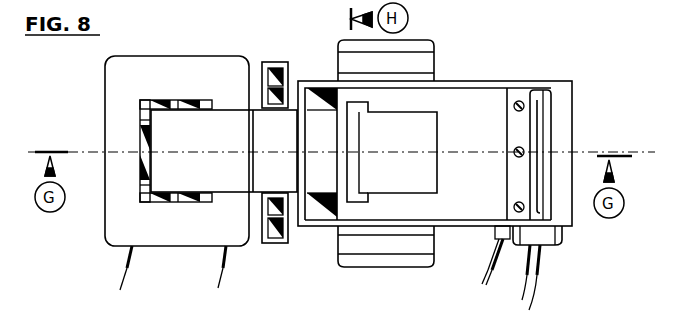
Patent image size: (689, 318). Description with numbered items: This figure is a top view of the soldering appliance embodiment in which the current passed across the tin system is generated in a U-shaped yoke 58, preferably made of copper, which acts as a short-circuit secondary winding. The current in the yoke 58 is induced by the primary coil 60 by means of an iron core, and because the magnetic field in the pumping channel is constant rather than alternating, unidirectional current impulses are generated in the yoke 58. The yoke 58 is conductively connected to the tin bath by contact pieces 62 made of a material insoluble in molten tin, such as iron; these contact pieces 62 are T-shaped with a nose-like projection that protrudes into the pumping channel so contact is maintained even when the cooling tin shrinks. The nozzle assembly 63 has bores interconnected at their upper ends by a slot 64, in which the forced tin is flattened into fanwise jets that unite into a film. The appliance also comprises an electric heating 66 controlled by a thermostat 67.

The U-shaped yoke 58 is at (437, 62).
The primary coil 60 is at (168, 237).
The contact pieces 62 is at (338, 77).
The nozzle assembly 63 is at (538, 138).
The slot 64 is at (532, 100).
The electric heating 66 is at (550, 240).
The thermostat 67 is at (508, 248).